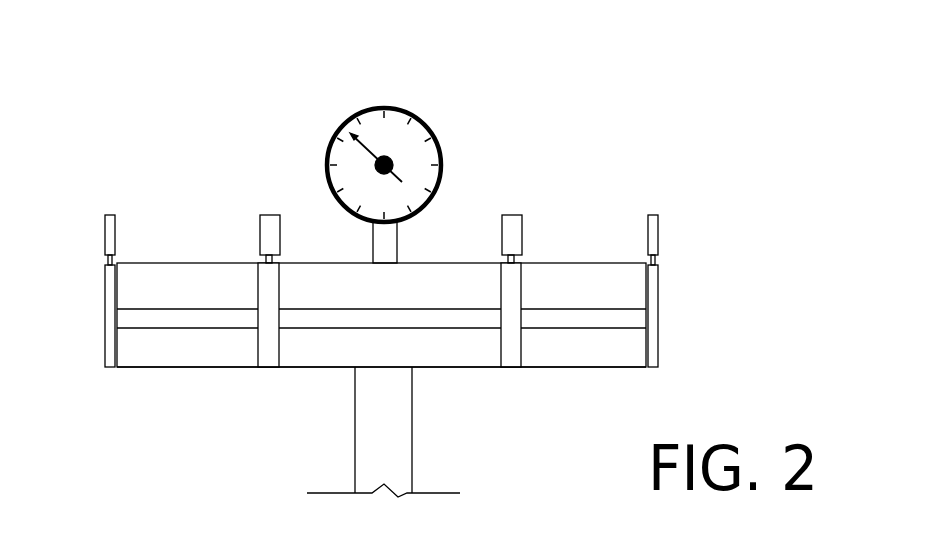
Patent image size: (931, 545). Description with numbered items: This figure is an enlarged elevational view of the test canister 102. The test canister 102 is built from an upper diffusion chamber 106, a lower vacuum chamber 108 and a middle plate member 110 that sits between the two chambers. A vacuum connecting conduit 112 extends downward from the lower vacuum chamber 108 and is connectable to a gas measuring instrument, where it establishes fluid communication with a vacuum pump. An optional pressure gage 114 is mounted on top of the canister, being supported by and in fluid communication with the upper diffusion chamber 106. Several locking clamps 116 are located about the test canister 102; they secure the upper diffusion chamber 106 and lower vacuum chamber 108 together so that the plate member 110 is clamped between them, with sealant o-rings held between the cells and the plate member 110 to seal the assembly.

The test canister 102 is at (165, 200).
The upper diffusion chamber 106 is at (572, 263).
The lower vacuum chamber 108 is at (600, 370).
The middle plate member 110 is at (635, 320).
The vacuum connecting conduit 112 is at (400, 425).
The pressure gage 114 is at (417, 112).
The locking clamps 116 is at (105, 293).